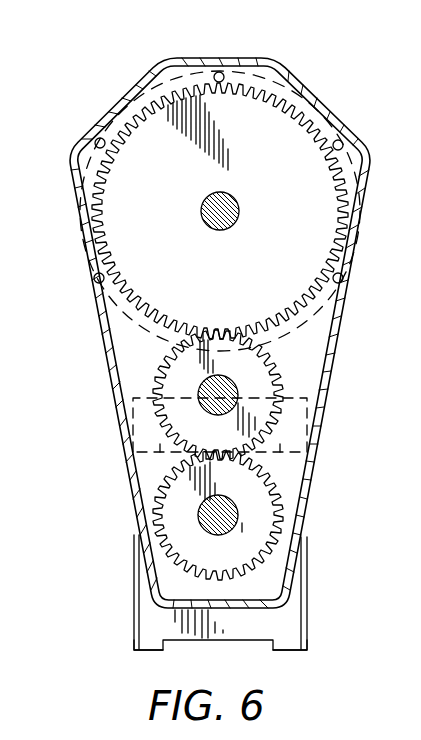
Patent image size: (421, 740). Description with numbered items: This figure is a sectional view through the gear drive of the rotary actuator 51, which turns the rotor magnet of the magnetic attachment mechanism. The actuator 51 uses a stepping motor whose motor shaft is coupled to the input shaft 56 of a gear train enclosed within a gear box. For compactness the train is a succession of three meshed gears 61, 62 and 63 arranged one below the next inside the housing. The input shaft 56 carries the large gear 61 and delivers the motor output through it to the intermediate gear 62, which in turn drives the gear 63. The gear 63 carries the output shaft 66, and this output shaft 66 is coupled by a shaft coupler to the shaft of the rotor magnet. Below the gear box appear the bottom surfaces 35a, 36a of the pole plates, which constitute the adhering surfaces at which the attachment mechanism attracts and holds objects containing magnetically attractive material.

The actuator 51 is at (330, 93).
The gear 61 is at (320, 205).
The input shaft 56 is at (203, 212).
The gear 62 is at (252, 381).
The gear 63 is at (260, 502).
The output shaft 66 is at (207, 522).
The bottom surface of pole plate 35a is at (148, 651).
The bottom surface of pole plate 36a is at (290, 651).